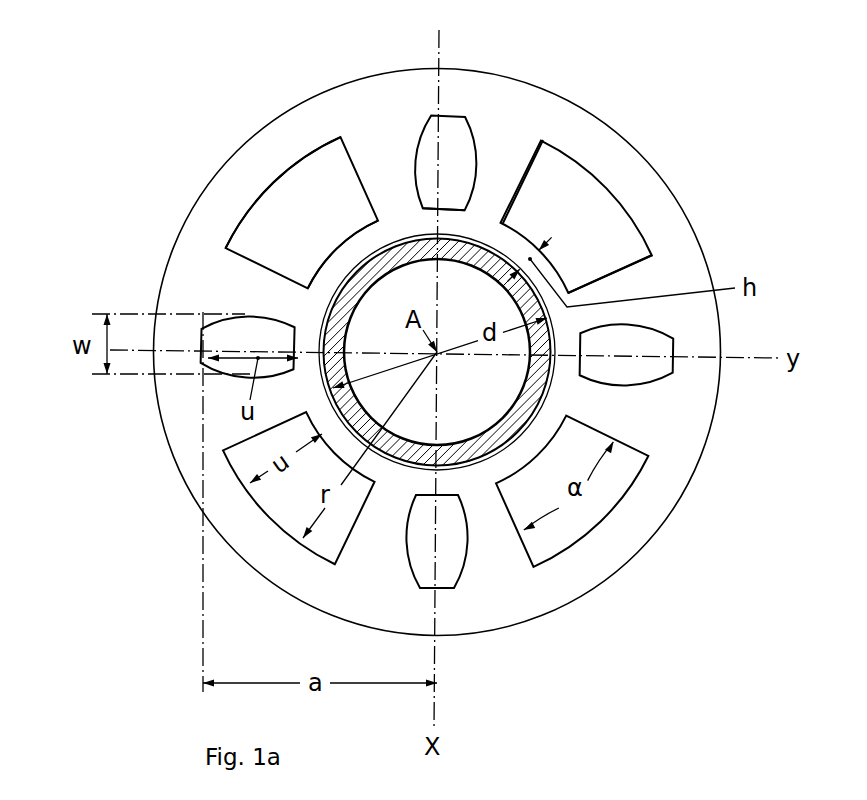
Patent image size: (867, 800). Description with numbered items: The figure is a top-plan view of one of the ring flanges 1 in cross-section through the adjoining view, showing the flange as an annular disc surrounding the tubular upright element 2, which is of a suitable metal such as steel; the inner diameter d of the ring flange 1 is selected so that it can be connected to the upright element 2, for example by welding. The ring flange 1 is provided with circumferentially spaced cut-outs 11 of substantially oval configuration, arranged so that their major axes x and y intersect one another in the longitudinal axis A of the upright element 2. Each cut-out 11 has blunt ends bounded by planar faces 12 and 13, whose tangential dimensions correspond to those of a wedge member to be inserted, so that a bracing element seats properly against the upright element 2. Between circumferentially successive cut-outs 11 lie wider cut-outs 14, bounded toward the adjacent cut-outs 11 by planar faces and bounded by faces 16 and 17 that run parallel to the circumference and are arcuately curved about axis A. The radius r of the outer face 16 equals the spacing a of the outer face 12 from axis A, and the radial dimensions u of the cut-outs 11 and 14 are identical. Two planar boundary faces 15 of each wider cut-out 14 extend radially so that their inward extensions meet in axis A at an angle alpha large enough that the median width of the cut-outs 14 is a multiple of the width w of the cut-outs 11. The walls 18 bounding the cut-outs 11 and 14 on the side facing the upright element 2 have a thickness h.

The ring flange 1 is at (525, 592).
The upright element 2 is at (465, 455).
The cut-outs 11 is at (465, 151).
The planar face 12 is at (452, 115).
The planar face 13 is at (433, 208).
The wider cut-outs 14 is at (295, 194).
The planar boundary faces 15 is at (613, 260).
The outer face 16 is at (329, 135).
The inner face 17 is at (333, 252).
The walls 18 is at (568, 362).